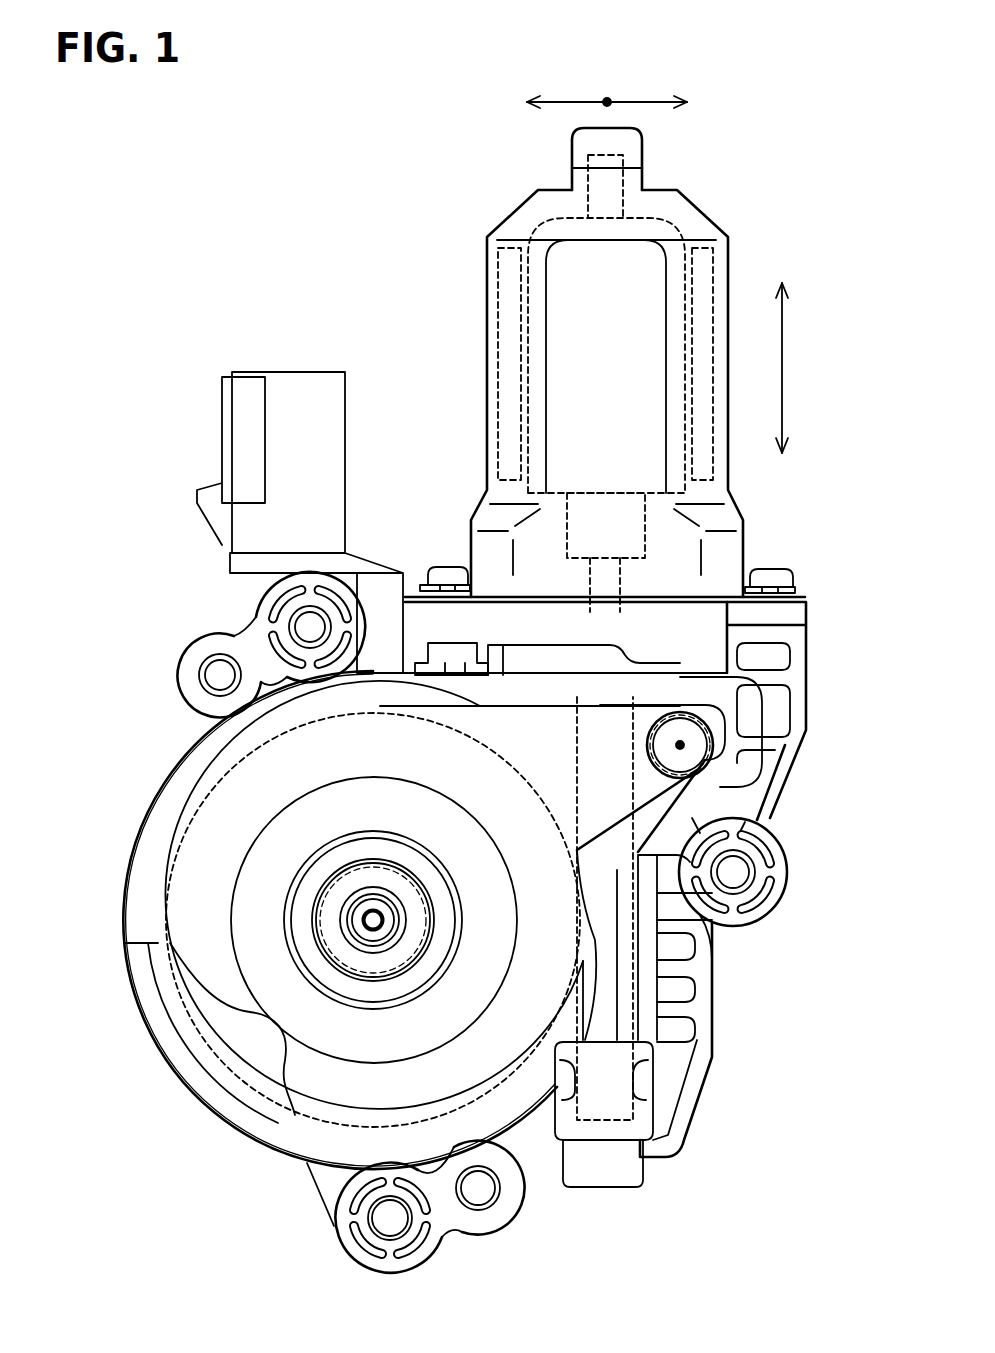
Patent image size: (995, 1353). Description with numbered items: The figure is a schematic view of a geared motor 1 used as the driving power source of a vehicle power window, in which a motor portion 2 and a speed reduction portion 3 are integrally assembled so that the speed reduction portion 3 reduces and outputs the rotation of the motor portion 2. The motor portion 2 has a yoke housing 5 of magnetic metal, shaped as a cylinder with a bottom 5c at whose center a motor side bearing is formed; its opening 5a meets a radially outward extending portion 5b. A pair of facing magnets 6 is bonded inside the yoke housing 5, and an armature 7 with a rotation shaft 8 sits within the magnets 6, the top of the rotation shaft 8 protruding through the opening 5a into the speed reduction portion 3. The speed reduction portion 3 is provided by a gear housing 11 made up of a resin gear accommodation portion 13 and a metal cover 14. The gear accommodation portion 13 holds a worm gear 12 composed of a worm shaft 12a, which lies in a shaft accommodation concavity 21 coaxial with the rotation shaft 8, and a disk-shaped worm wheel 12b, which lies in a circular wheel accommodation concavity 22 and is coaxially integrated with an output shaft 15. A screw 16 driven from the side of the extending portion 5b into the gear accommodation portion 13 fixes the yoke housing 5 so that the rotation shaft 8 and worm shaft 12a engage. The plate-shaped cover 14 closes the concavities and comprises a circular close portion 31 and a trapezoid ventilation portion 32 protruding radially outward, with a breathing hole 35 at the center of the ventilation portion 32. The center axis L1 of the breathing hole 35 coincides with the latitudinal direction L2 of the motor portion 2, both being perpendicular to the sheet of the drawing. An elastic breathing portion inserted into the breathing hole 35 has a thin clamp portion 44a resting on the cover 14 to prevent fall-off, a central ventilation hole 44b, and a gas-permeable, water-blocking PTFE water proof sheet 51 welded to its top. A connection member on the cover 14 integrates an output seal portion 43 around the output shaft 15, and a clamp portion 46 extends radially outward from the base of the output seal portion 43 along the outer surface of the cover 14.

The motor 1 is at (365, 220).
The motor portion 2 is at (728, 413).
The speed reduction portion 3 is at (142, 823).
The yoke housing 5 is at (693, 206).
The opening 5a is at (670, 602).
The extending portion 5b is at (412, 597).
The bottom 5c is at (555, 192).
The magnets 6 is at (498, 300).
The armature 7 is at (540, 222).
The rotation shaft 8 is at (590, 583).
The gear housing 11 is at (86, 897).
The worm gear 12 is at (650, 1230).
The worm shaft 12a is at (612, 1120).
The worm wheel 12b is at (560, 1085).
The gear accommodation portion 13 is at (145, 975).
The cover 14 is at (143, 890).
The output shaft 15 is at (375, 920).
The screw 16 is at (447, 567).
The shaft accommodation concavity 21 is at (640, 1062).
The wheel accommodation concavity 22 is at (228, 1086).
The close portion 31 is at (245, 772).
The ventilation portion 32 is at (745, 707).
The breathing hole 35 is at (660, 780).
The output seal portion 43 is at (388, 1009).
The clamp portion 44a is at (650, 745).
The ventilation hole 44b is at (690, 760).
The clamp portion 46 is at (400, 778).
The water proof sheet 51 is at (750, 813).
The center axis of the breathing hole L1 is at (680, 745).
The latitudinal direction of the motor portion L2 is at (607, 104).